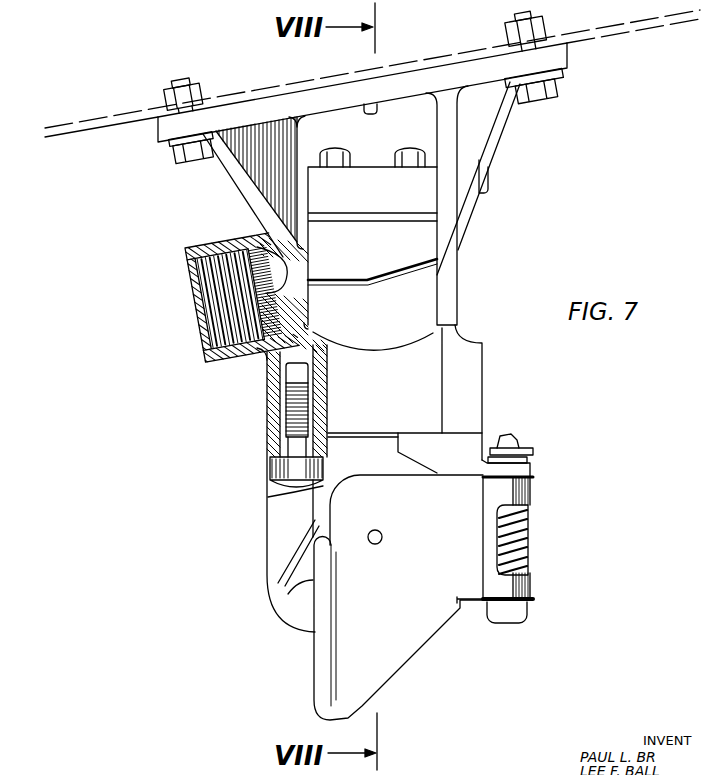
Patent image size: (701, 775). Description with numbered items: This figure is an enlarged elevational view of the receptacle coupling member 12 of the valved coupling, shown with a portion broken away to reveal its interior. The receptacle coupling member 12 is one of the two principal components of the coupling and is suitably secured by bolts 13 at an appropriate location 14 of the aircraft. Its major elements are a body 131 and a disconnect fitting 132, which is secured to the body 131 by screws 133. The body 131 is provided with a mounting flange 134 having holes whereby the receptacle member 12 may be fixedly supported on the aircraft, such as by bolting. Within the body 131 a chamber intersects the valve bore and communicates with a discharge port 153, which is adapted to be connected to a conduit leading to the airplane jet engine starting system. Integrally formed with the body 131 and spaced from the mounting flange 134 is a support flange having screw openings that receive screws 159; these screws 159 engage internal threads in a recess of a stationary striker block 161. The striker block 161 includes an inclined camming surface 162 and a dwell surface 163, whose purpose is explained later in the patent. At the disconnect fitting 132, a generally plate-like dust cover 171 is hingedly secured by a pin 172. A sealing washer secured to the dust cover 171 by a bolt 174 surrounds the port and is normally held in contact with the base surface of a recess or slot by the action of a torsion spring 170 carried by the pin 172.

The receptacle coupling member 12 is at (563, 231).
The bolts 13 is at (178, 146).
The location 14 is at (102, 128).
The body 131 is at (505, 125).
The disconnect fitting 132 is at (267, 522).
The screws 133 is at (280, 468).
The mounting flange 134 is at (218, 105).
The discharge port 153 is at (207, 307).
The screws 159 is at (408, 149).
The stationary striker block 161 is at (380, 255).
The inclined camming surface 162 is at (425, 268).
The dwell surface 163 is at (331, 283).
The torsion spring 170 is at (528, 537).
The dust cover 171 is at (413, 592).
The pin 172 is at (512, 435).
The bolt 174 is at (382, 535).